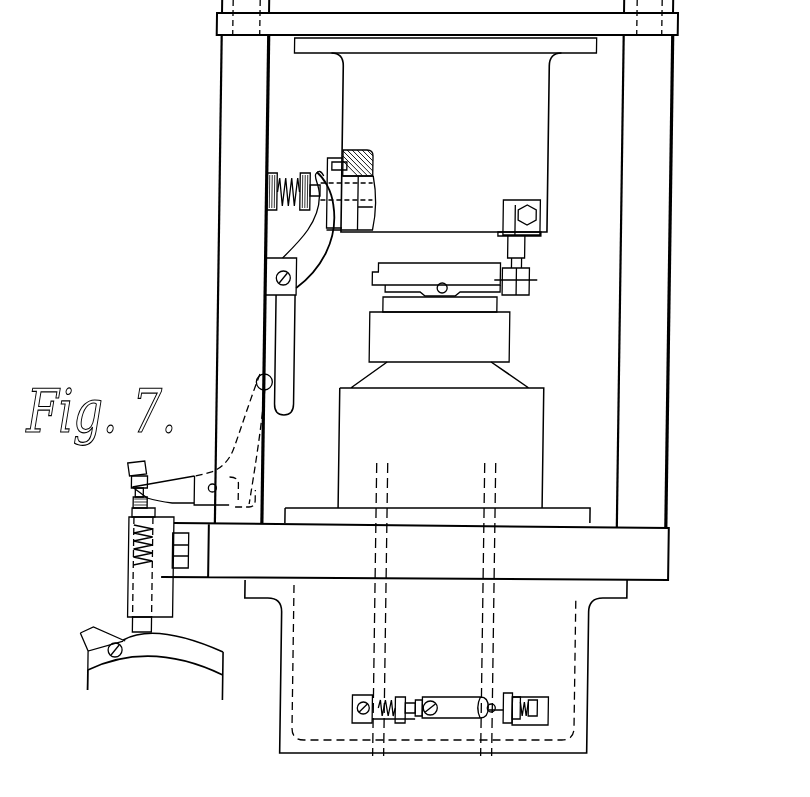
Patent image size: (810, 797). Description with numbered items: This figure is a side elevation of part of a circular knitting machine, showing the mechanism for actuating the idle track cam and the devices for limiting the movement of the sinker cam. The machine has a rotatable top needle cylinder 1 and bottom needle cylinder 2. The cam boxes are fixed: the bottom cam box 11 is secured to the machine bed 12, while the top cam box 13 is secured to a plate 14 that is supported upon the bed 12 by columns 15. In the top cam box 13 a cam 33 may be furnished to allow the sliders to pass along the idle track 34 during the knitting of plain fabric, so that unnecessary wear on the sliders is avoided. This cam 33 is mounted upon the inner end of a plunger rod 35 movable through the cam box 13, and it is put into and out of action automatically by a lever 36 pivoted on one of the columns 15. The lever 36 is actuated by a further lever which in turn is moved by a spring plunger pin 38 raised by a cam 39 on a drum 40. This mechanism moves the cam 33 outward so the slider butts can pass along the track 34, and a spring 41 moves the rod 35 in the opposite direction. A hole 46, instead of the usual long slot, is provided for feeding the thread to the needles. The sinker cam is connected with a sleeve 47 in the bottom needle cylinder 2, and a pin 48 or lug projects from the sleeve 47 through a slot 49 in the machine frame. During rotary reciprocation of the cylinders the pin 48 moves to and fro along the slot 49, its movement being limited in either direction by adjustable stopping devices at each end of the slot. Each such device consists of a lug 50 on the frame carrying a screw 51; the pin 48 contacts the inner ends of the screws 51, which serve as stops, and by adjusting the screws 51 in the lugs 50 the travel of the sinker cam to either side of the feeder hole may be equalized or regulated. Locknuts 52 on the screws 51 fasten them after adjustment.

The top needle cylinder 1 is at (456, 248).
The bottom needle cylinder 2 is at (439, 329).
The bottom cam box 11 is at (438, 442).
The machine bed 12 is at (414, 638).
The top cam box 13 is at (444, 135).
The plate 14 is at (411, 23).
The columns 15 is at (444, 264).
The cam 33 is at (371, 198).
The idle track 34 is at (238, 452).
The plunger rod 35 is at (358, 186).
The lever 36 is at (313, 264).
The spring plunger pin 38 is at (146, 626).
The cam 39 is at (94, 638).
The drum 40 is at (155, 645).
The spring 41 is at (284, 175).
The hole 46 is at (444, 283).
The sleeve 47 is at (485, 650).
The pin 48 is at (434, 705).
The slot 49 is at (466, 706).
The lug 50 is at (401, 707).
The screw 51 is at (370, 703).
The locknut 52 is at (505, 726).